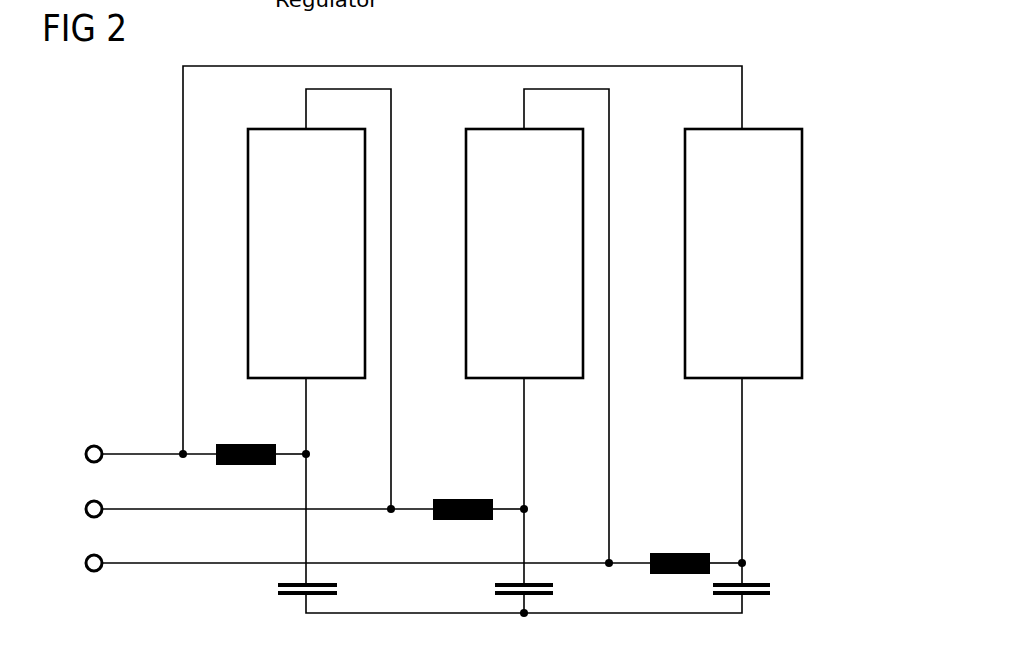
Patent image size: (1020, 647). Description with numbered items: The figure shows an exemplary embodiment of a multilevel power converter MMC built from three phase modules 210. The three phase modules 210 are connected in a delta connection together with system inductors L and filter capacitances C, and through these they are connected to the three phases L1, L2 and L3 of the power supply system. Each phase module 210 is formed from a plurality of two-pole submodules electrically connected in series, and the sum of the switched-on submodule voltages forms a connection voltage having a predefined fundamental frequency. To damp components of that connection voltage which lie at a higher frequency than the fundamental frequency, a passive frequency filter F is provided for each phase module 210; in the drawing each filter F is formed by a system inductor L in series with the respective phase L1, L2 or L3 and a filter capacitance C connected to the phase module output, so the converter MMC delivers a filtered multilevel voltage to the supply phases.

The phase module 210 is at (365, 249).
The multilevel power converter MMC is at (781, 33).
The system inductor L is at (462, 492).
The filter capacitance C is at (534, 590).
The passive frequency filter F is at (333, 448).
The first phase L1 is at (137, 454).
The second phase L2 is at (245, 509).
The third phase L3 is at (354, 563).